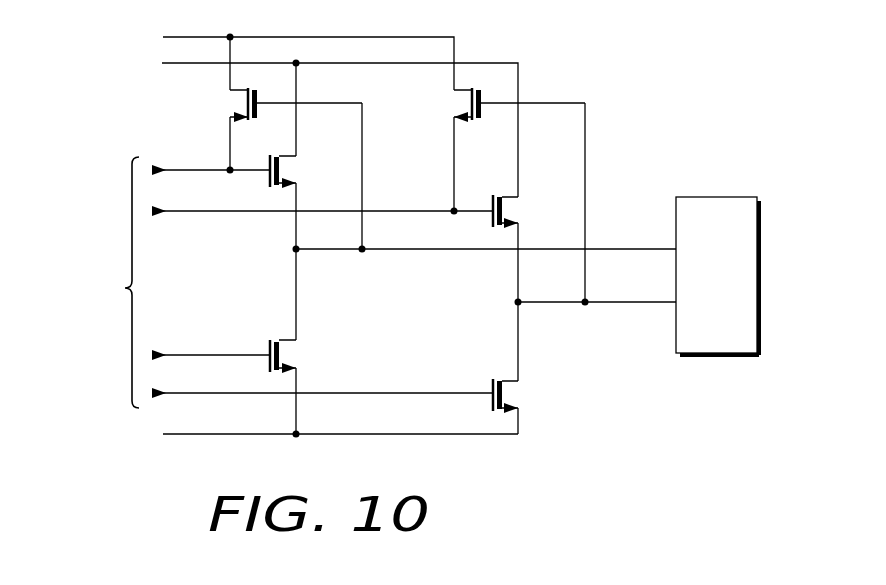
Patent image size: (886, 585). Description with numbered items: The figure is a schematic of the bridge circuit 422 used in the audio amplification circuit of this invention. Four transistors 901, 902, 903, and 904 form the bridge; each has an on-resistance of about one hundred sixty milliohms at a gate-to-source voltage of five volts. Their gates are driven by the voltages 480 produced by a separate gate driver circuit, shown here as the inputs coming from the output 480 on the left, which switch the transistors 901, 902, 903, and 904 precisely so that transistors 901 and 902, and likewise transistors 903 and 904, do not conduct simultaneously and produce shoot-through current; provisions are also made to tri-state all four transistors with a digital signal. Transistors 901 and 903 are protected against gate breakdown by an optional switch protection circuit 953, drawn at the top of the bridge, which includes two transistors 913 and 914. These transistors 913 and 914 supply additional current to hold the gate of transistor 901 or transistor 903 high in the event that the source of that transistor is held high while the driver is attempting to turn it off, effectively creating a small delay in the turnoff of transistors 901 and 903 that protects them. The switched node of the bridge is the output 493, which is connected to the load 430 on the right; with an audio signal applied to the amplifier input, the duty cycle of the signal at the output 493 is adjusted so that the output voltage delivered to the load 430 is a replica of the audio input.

The transistor 913 is at (240, 104).
The transistor 914 is at (468, 104).
The transistor 903 is at (286, 172).
The transistor 904 is at (286, 357).
The transistor 901 is at (509, 212).
The transistor 902 is at (509, 395).
The switch protection circuit 953 is at (152, 108).
The output 493 is at (618, 320).
The load 430 is at (712, 326).
The circuit 422 is at (530, 486).
The voltages 480 is at (272, 282).